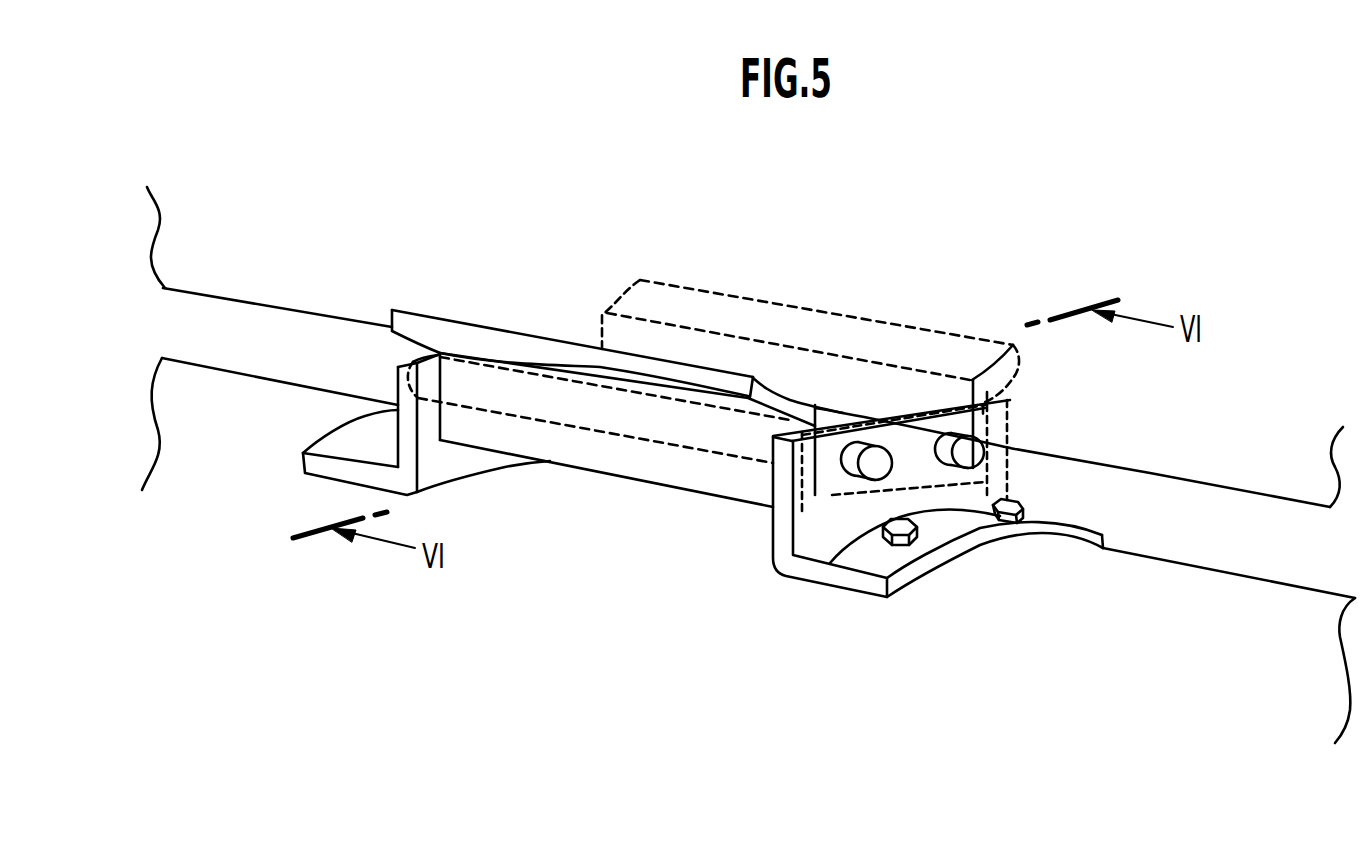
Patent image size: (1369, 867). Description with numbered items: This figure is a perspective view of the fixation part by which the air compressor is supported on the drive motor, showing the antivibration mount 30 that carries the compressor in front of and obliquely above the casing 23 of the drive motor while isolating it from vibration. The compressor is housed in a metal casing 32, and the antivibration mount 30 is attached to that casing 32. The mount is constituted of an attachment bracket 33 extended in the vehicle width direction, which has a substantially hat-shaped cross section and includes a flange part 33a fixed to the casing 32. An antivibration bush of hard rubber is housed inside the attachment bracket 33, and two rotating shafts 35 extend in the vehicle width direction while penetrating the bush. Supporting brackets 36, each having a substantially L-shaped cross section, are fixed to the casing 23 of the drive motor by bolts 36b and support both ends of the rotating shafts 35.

The casing 23 is at (1111, 652).
The antivibration mount 30 is at (722, 543).
The casing 32 is at (380, 276).
The attachment bracket 33 is at (638, 460).
The flange part 33a is at (497, 353).
The rotating shafts 35 is at (882, 465).
The supporting brackets 36 is at (870, 557).
The bolts 36b is at (873, 560).